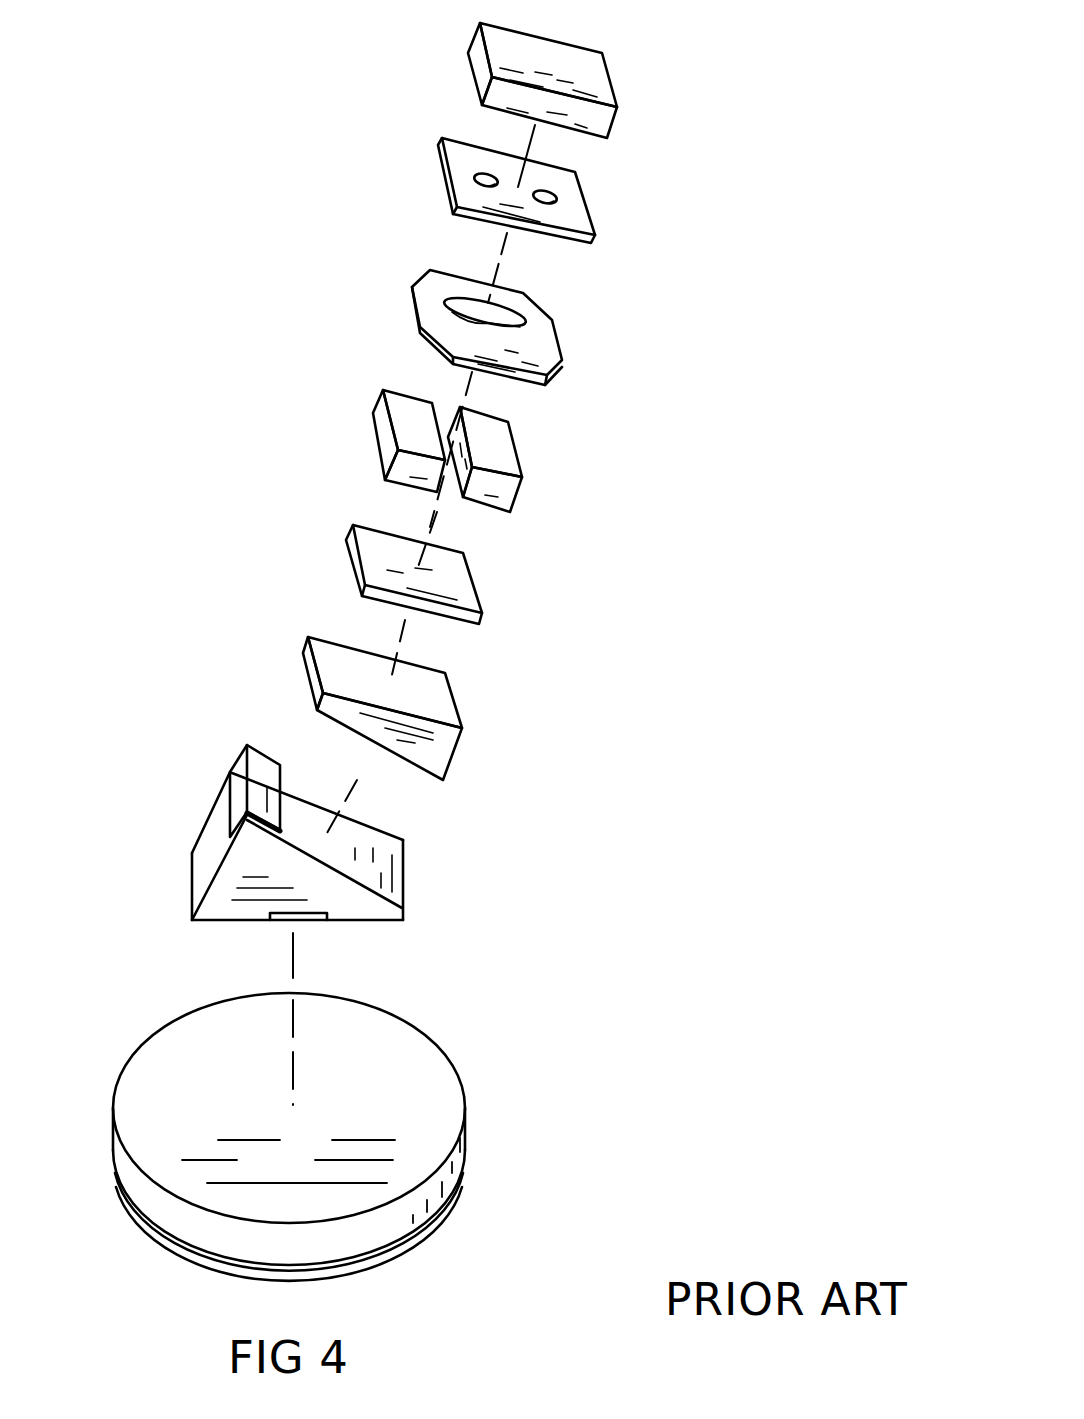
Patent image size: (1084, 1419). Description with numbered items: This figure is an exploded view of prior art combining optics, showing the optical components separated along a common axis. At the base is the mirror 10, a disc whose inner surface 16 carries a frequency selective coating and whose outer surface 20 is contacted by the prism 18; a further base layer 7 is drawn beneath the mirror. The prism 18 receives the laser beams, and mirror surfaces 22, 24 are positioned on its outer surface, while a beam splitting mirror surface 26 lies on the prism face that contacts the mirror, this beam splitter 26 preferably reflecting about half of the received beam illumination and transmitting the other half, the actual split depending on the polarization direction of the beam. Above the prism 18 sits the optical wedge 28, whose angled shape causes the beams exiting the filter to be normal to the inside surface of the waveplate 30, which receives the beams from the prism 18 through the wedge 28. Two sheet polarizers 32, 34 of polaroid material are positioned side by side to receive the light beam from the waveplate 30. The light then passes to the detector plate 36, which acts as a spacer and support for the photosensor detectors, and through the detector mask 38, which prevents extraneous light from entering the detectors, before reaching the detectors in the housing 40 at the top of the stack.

The base layer 7 is at (423, 1237).
The mirror 10 is at (445, 1183).
The inner surface 16 is at (172, 1236).
The prism 18 is at (243, 905).
The outer surface 20 is at (413, 1103).
The mirror surface 22 is at (237, 784).
The mirror surface 24 is at (262, 769).
The beam splitting mirror surface 26 is at (320, 922).
The optical wedge 28 is at (433, 707).
The waveplate 30 is at (462, 595).
The sheet polarizer 32 is at (407, 428).
The sheet polarizer 34 is at (502, 458).
The detector plate 36 is at (535, 338).
The detector mask 38 is at (577, 208).
The housing 40 is at (593, 90).